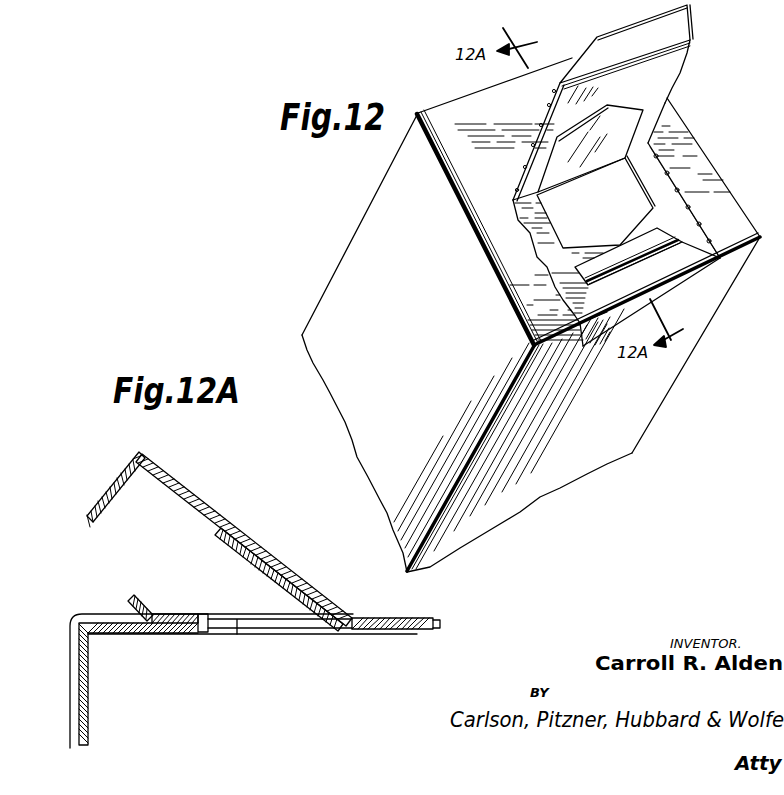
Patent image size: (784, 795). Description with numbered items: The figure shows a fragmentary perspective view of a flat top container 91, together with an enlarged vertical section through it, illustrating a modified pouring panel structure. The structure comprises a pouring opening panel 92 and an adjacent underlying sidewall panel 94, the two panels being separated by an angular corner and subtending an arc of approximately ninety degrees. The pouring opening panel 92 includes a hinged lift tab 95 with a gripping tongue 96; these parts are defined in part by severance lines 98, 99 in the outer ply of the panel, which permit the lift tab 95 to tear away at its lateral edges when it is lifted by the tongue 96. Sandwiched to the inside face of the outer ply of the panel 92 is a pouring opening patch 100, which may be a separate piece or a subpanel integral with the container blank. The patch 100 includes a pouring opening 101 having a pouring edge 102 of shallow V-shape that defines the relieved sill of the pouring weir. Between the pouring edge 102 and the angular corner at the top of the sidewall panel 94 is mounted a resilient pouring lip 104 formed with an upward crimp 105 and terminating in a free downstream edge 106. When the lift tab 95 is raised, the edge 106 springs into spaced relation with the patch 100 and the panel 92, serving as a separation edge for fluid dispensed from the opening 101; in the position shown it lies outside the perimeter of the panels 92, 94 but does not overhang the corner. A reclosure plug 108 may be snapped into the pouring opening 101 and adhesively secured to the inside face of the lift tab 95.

In FIG. 12, the flat top container 91 is at (353, 235).
In FIG. 12, the pouring opening panel 92 is at (472, 186).
In FIG. 12A, the pouring opening panel 92 is at (413, 617).
In FIG. 12, the sidewall panel 94 is at (538, 497).
In FIG. 12A, the sidewall panel 94 is at (70, 738).
In FIG. 12, the lift tab 95 is at (667, 65).
In FIG. 12A, the lift tab 95 is at (200, 493).
In FIG. 12, the gripping tongue 96 is at (680, 20).
In FIG. 12A, the gripping tongue 96 is at (107, 488).
In FIG. 12, the severance line 98 is at (547, 262).
In FIG. 12, the severance line 99 is at (697, 208).
In FIG. 12, the pouring opening patch 100 is at (652, 172).
In FIG. 12A, the pouring opening patch 100 is at (365, 635).
In FIG. 12, the pouring opening 101 is at (632, 203).
In FIG. 12, the pouring edge 102 is at (595, 243).
In FIG. 12A, the pouring edge 102 is at (207, 633).
In FIG. 12, the pouring lip 104 is at (697, 220).
In FIG. 12A, the pouring lip 104 is at (208, 616).
In FIG. 12, the upward crimp 105 is at (682, 280).
In FIG. 12A, the upward crimp 105 is at (172, 608).
In FIG. 12, the downstream edge 106 is at (633, 267).
In FIG. 12A, the downstream edge 106 is at (131, 593).
In FIG. 12, the reclosure plug 108 is at (623, 125).
In FIG. 12A, the reclosure plug 108 is at (260, 567).